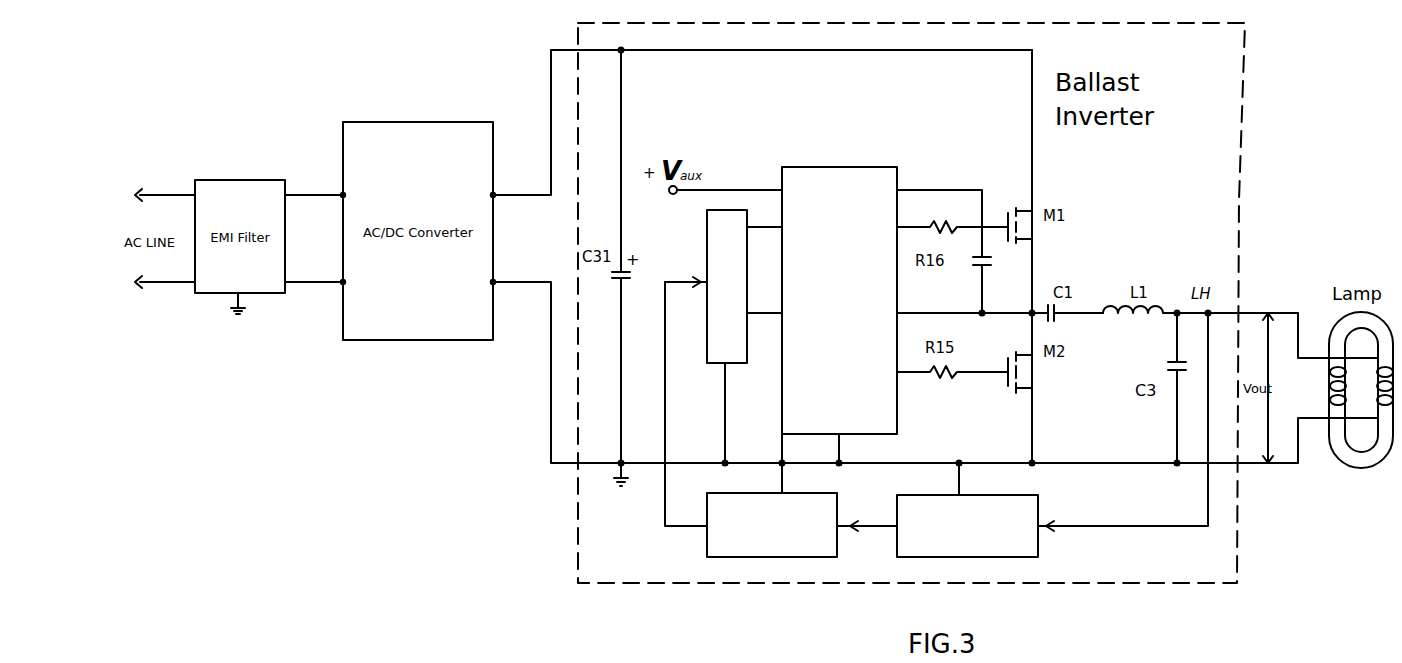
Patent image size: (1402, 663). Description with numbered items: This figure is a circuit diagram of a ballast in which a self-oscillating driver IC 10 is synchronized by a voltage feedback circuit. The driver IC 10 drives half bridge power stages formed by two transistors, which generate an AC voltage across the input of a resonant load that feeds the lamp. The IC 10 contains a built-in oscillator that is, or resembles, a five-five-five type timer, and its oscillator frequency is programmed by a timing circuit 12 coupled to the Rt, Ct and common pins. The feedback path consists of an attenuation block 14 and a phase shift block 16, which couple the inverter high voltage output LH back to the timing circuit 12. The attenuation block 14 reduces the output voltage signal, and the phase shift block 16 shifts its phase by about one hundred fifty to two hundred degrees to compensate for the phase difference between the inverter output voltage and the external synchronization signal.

The self-oscillating driver IC 10 is at (850, 163).
The timing circuit 12 is at (707, 248).
The attenuation block 14 is at (1040, 546).
The phase shift block 16 is at (705, 545).